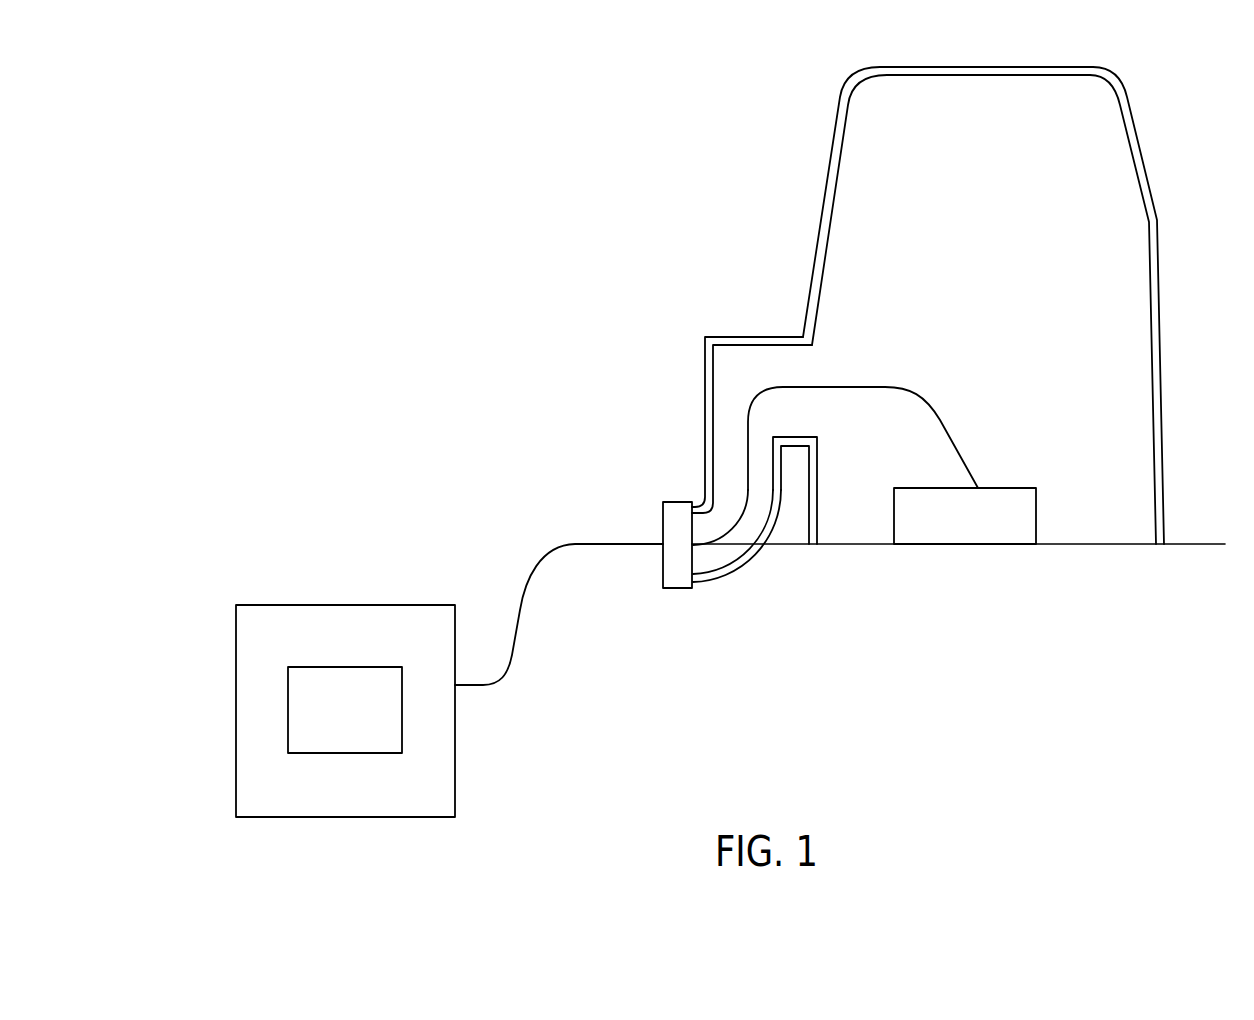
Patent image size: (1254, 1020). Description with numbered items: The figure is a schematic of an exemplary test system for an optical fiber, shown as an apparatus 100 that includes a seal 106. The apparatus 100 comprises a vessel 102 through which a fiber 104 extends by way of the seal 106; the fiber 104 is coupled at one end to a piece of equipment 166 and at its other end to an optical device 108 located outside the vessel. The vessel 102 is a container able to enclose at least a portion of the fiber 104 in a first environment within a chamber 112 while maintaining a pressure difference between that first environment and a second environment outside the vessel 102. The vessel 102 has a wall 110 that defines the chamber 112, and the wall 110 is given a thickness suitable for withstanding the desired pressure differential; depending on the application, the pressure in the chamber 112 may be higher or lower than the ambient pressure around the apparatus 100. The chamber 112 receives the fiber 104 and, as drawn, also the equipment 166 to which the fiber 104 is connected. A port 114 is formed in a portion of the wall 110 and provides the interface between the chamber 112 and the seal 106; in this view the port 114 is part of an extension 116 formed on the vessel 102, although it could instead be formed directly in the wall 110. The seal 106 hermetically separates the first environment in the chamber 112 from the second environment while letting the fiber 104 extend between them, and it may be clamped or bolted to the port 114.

The apparatus 100 is at (425, 182).
The vessel 102 is at (838, 188).
The fiber 104 is at (918, 396).
The seal 106 is at (662, 512).
The optical device 108 is at (350, 604).
The wall 110 is at (1145, 158).
The chamber 112 is at (1007, 200).
The port 114 is at (697, 552).
The extension 116 is at (705, 402).
The equipment 166 is at (972, 540).